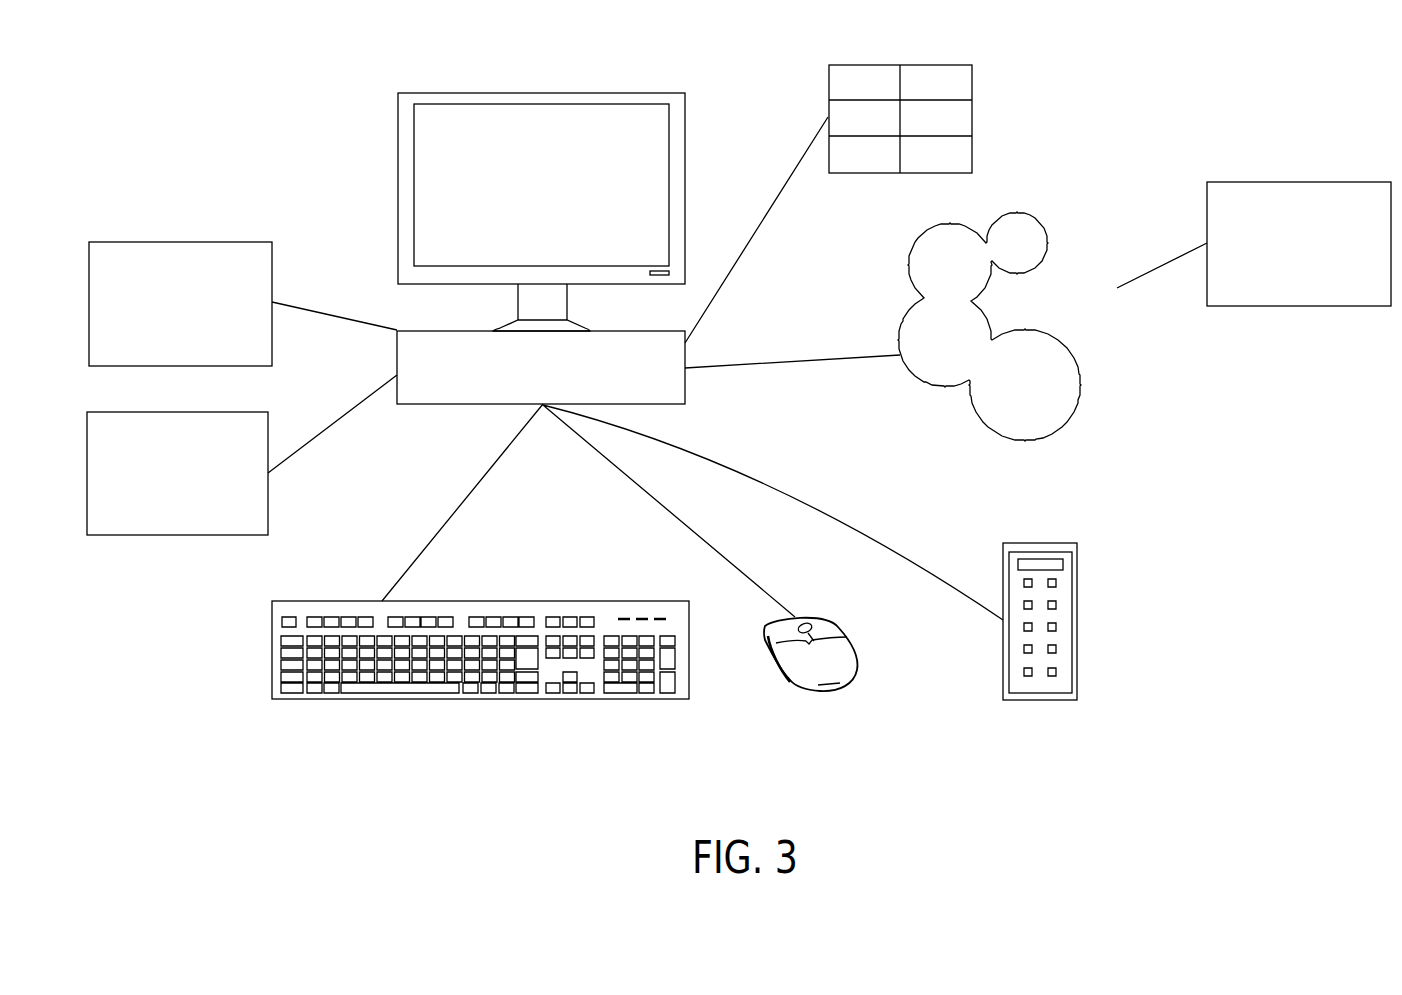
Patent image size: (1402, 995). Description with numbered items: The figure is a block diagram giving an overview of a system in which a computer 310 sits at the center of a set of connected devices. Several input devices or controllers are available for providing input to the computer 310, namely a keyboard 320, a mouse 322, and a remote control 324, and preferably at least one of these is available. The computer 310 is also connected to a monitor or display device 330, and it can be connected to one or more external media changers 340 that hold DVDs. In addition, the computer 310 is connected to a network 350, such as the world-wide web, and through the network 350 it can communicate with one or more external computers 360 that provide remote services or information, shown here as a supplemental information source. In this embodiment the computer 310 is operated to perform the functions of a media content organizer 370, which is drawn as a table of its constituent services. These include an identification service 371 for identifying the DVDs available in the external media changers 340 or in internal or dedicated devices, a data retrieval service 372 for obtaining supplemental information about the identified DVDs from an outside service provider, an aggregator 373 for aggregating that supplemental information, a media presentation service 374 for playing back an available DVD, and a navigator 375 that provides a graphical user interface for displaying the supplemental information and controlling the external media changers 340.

The computer 310 is at (623, 331).
The keyboard 320 is at (612, 601).
The mouse 322 is at (815, 615).
The remote control 324 is at (1065, 543).
The monitor or display device 330 is at (685, 116).
The external media changer 340 is at (238, 242).
The network 350 is at (1027, 212).
The external computer 360 is at (1327, 182).
The media content organizer 370 is at (925, 103).
The identification service 371 is at (865, 82).
The data retrieval service 372 is at (936, 82).
The aggregator 373 is at (865, 118).
The media presentation service 374 is at (936, 118).
The navigator 375 is at (865, 154).